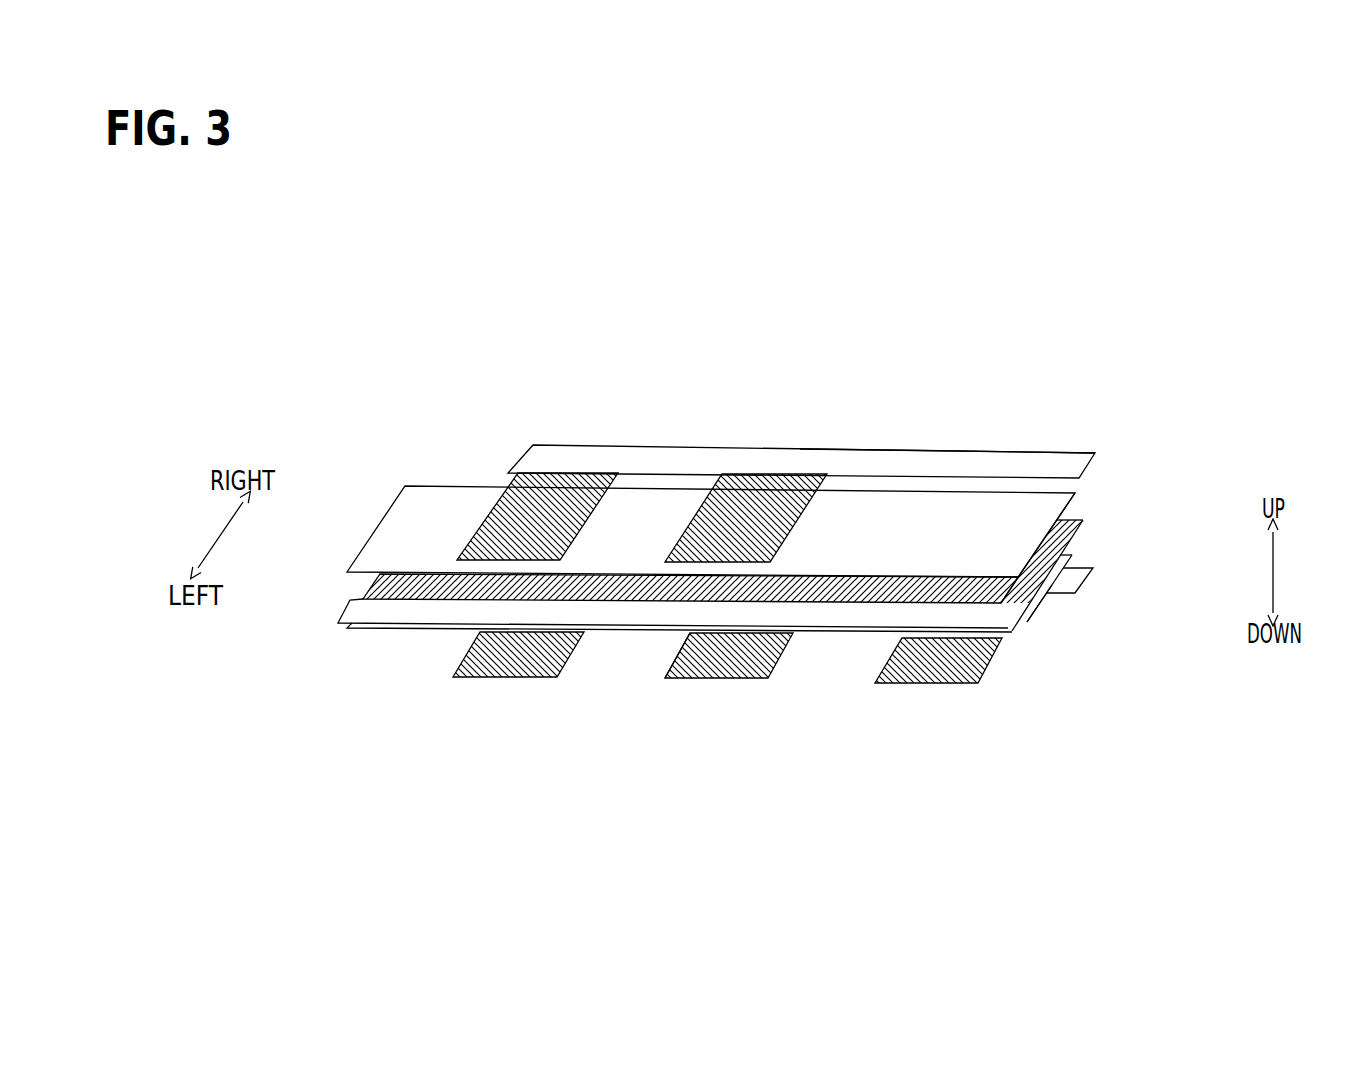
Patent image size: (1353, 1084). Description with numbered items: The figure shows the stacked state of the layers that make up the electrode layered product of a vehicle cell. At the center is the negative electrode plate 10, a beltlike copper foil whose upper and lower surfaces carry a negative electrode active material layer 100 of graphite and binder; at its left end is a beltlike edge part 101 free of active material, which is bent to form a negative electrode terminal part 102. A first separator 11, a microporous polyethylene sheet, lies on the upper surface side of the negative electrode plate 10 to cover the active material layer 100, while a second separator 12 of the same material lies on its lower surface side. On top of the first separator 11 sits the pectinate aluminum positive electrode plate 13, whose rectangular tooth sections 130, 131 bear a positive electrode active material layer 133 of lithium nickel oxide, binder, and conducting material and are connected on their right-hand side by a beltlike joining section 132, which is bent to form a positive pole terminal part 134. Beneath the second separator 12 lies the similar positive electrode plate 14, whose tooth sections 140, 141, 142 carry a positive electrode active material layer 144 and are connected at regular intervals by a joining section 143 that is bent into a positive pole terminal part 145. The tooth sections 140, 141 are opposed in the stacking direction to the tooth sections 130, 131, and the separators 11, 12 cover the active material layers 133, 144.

The negative electrode plate 10 is at (1075, 533).
The first separator 11 is at (1057, 503).
The second separator 12 is at (1022, 613).
The positive electrode plate 13 is at (677, 453).
The positive electrode plate 14 is at (683, 678).
The negative electrode active material layer 100 is at (1068, 553).
The edge part 101 is at (1002, 620).
The negative electrode terminal part 102 is at (388, 607).
The tooth section 130 is at (492, 517).
The tooth section 131 is at (690, 520).
The joining section 132 is at (883, 455).
The positive electrode active material layer 133 is at (568, 528).
The positive pole terminal part 134 is at (1010, 463).
The tooth section 140 is at (462, 677).
The tooth section 141 is at (740, 672).
The tooth section 142 is at (913, 672).
The joining section 143 is at (1078, 585).
The positive electrode active material layer 144 is at (537, 672).
The positive pole terminal part 145 is at (1050, 605).